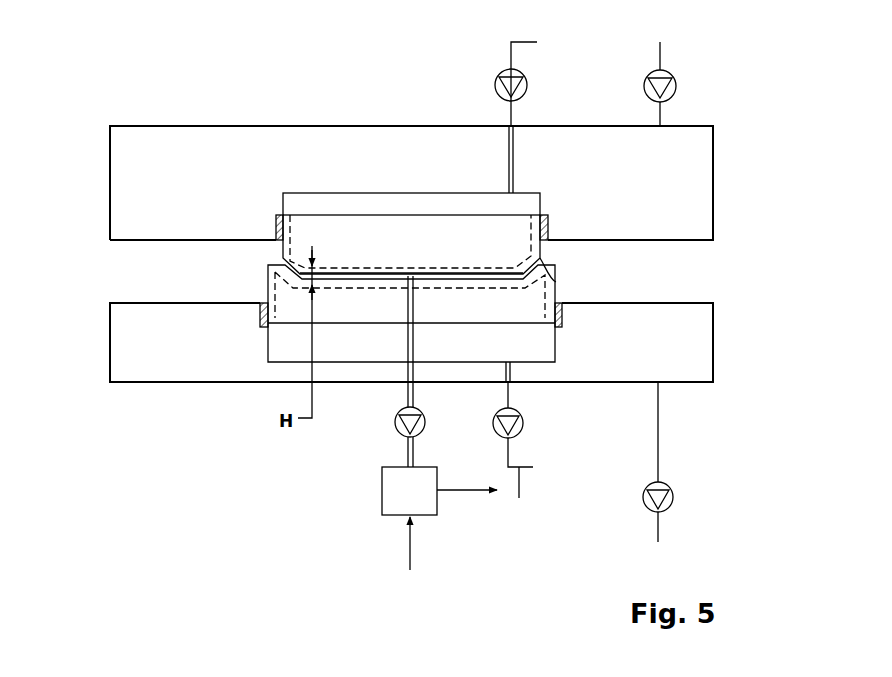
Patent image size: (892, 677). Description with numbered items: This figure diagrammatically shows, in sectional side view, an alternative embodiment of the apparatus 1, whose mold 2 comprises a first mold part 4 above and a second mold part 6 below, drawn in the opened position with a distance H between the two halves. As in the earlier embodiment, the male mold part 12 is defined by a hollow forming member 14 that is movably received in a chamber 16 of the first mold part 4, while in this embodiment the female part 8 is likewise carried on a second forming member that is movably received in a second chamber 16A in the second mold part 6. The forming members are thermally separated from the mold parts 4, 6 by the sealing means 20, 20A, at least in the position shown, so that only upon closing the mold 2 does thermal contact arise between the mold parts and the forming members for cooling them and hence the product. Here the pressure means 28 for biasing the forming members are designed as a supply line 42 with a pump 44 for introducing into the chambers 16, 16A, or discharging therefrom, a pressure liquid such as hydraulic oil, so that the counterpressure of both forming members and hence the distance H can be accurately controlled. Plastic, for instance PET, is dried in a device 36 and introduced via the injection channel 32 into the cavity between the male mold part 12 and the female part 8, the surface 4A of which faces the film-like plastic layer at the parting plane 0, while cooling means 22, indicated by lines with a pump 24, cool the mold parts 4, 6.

The apparatus 1 is at (100, 108).
The mold 2 is at (100, 184).
The first mold part 4 is at (722, 163).
The second mold part 6 is at (716, 364).
The female part 8 is at (556, 282).
The male mold part 12 is at (548, 243).
The forming member 14 is at (375, 233).
The chamber 16 is at (319, 206).
The second chamber 16A is at (350, 344).
The thermally insulating seal 20 is at (272, 222).
The sealing means 20A is at (562, 315).
The parting plane 0 is at (272, 262).
The lower mould surface 4A is at (556, 290).
The cooling means 22 is at (660, 116).
The pump 24 is at (676, 86).
The pressure means 28 is at (538, 70).
The injection channel 32 is at (415, 393).
The device 36 is at (382, 490).
The supply line 42 is at (509, 158).
The pump 44 is at (496, 80).